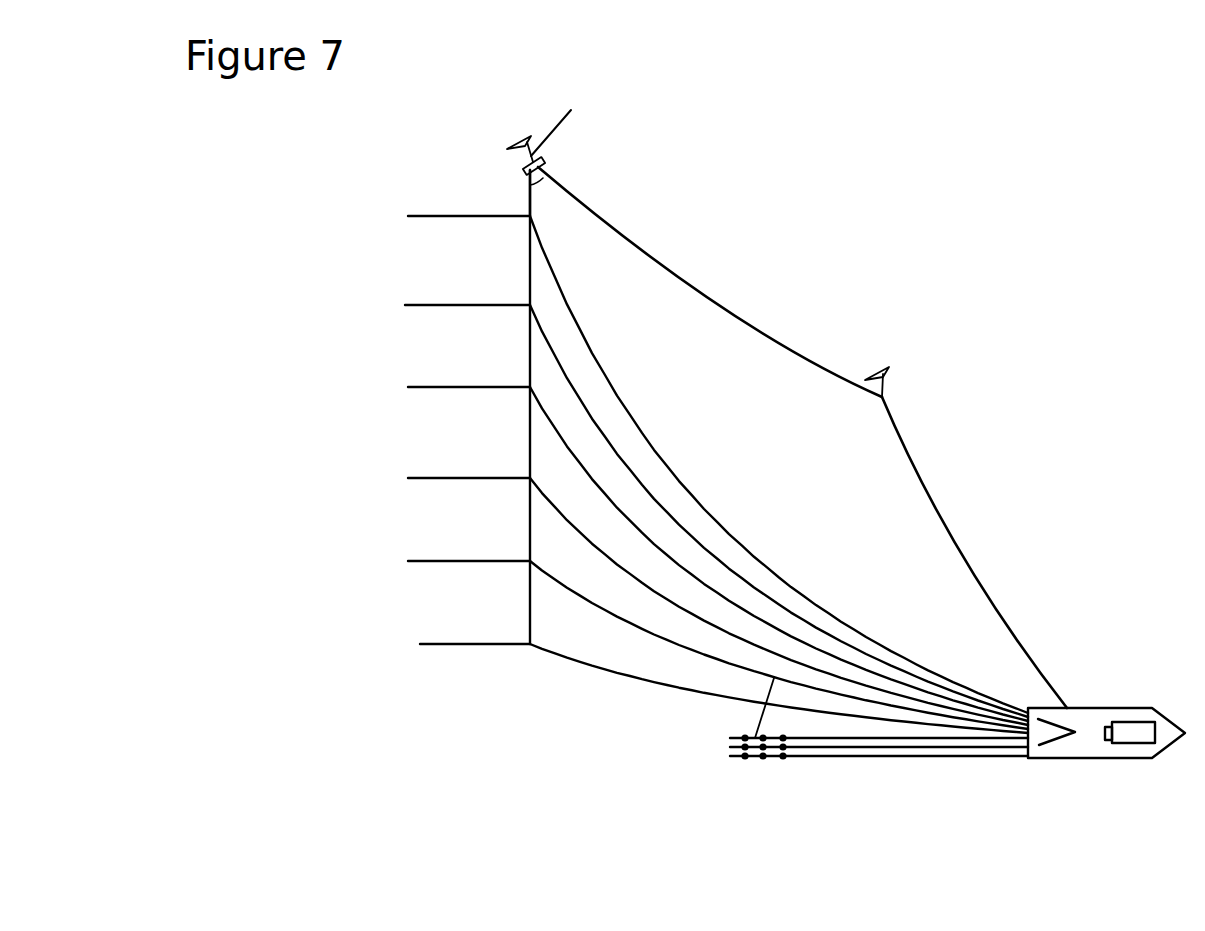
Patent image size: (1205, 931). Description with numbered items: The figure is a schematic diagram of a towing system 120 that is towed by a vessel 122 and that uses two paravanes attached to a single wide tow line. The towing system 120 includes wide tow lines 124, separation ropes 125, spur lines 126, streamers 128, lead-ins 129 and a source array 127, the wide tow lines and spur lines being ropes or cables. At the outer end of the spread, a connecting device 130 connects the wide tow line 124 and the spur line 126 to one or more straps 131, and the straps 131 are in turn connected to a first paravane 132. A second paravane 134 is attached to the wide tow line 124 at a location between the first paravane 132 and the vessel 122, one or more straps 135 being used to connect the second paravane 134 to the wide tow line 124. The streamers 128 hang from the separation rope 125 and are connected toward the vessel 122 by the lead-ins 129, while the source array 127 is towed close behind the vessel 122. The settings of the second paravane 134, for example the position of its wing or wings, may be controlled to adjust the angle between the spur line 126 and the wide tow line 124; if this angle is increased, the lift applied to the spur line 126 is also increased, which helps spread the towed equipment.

The towing system 120 is at (891, 158).
The vessel 122 is at (1070, 750).
The wide tow line 124 is at (693, 285).
The separation rope 125 is at (530, 262).
The spur line 126 is at (529, 191).
The source array 127 is at (802, 748).
The streamers 128 is at (442, 305).
The lead-ins 129 is at (647, 433).
The connecting device 130 is at (541, 161).
The straps 131 is at (573, 124).
The first paravane 132 is at (528, 136).
The second paravane 134 is at (877, 364).
The straps 135 is at (886, 382).